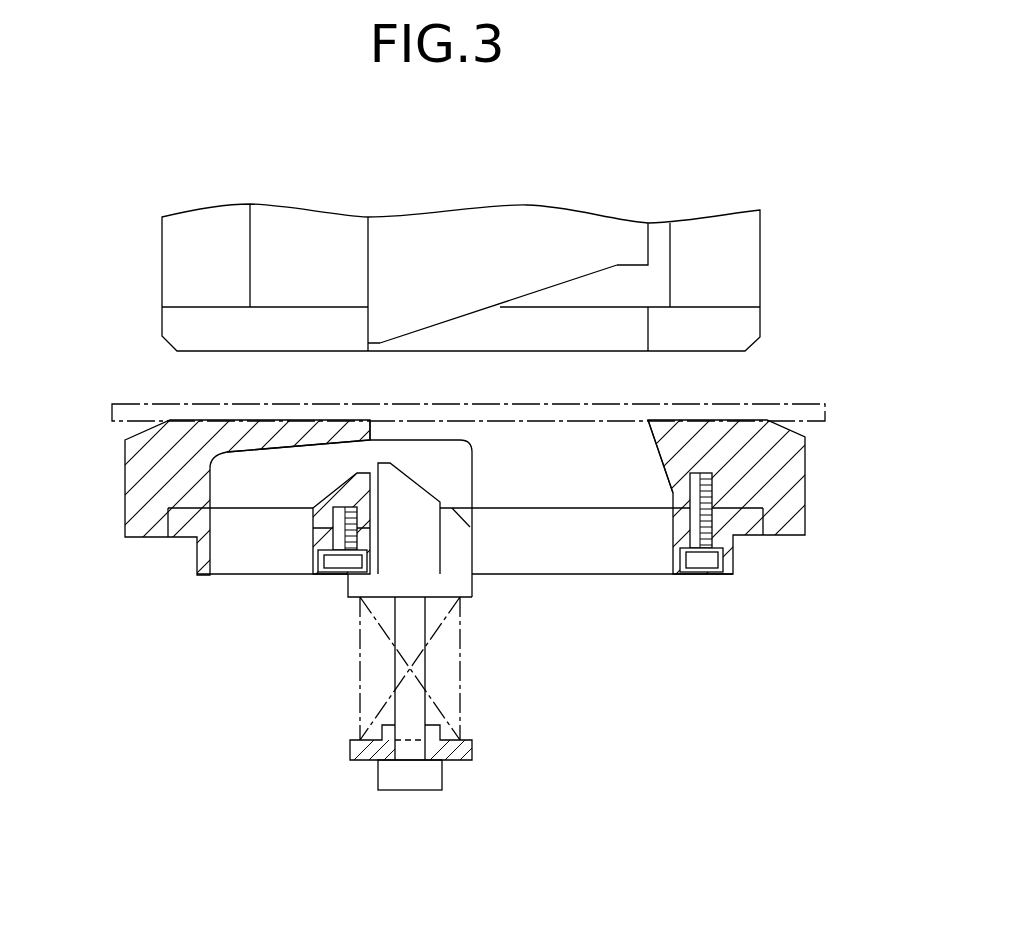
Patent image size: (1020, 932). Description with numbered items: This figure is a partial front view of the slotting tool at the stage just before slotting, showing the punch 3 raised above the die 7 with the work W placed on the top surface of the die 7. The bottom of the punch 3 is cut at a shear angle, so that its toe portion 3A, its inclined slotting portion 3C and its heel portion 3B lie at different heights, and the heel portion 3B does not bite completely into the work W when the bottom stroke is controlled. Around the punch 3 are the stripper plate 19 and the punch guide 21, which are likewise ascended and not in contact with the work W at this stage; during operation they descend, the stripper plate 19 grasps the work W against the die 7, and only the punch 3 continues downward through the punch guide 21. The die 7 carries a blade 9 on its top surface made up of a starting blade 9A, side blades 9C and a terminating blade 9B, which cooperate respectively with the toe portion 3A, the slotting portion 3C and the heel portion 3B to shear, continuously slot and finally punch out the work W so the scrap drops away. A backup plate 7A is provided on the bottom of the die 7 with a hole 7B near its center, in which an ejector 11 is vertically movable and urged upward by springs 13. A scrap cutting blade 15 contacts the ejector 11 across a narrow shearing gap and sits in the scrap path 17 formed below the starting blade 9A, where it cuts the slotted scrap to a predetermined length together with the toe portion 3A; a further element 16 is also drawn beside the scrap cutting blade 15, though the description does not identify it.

The punch 3 is at (601, 236).
The toe portion 3A is at (388, 342).
The heel portion 3B is at (627, 247).
The slotting portion 3C is at (490, 303).
The punch guide 21 is at (162, 246).
The stripper plate 19 is at (162, 327).
The work W is at (827, 404).
The die 7 is at (125, 487).
The backup plate 7A is at (748, 530).
The hole 7B is at (668, 523).
The blade 9 is at (677, 430).
The starting blade 9A is at (373, 428).
The terminating blade 9B is at (650, 425).
The side blades 9C is at (492, 430).
The ejector 11 is at (413, 485).
The springs 13 is at (462, 674).
The scrap cutting blade 15 is at (313, 525).
The bolt 16 is at (332, 560).
The scrap path 17 is at (370, 451).